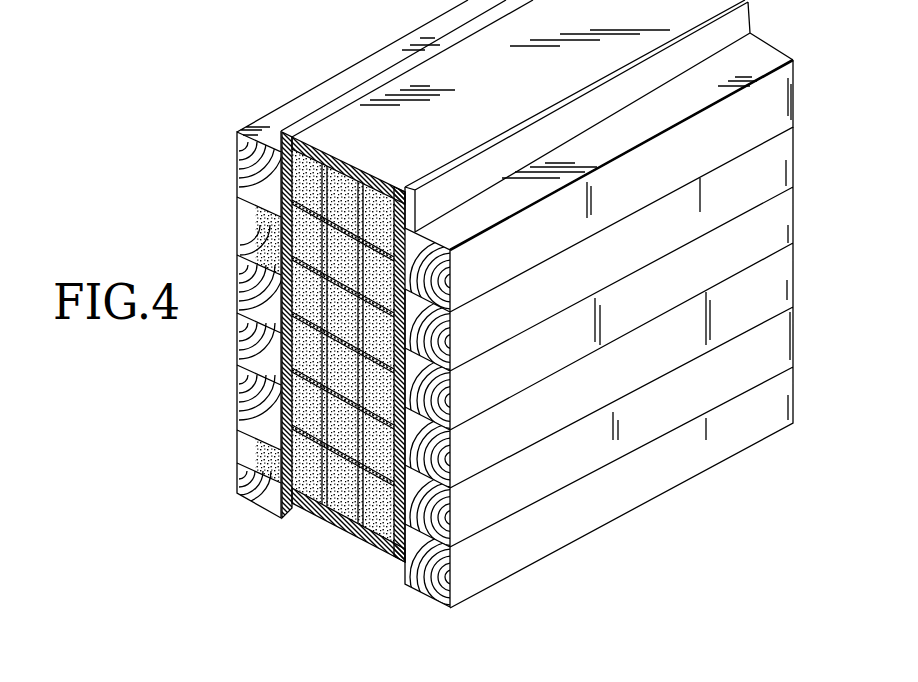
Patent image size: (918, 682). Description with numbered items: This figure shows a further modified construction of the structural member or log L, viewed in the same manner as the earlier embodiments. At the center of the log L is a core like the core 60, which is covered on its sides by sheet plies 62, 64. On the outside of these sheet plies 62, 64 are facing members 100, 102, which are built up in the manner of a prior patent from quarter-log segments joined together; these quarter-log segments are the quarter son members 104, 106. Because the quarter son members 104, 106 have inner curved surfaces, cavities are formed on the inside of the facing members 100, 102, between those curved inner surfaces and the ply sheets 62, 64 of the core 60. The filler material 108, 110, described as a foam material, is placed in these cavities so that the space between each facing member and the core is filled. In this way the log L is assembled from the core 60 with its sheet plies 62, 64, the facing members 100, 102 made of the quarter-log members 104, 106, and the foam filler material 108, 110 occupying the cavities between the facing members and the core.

The core 60 is at (337, 535).
The sheet ply 62 is at (345, 97).
The sheet ply 64 is at (613, 78).
The facing member 100 is at (206, 255).
The facing member 102 is at (467, 213).
The quarter-log segment member 104 is at (238, 150).
The quarter-log segment member 106 is at (455, 283).
The filler material 108 is at (285, 348).
The filler material 110 is at (408, 196).
The log L is at (206, 404).